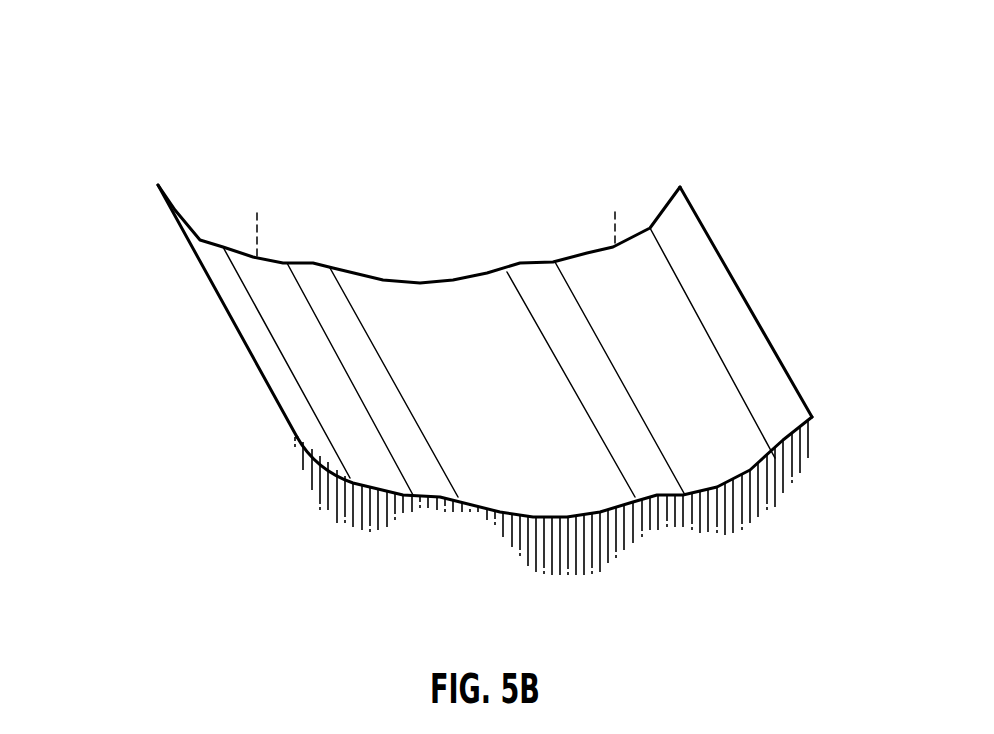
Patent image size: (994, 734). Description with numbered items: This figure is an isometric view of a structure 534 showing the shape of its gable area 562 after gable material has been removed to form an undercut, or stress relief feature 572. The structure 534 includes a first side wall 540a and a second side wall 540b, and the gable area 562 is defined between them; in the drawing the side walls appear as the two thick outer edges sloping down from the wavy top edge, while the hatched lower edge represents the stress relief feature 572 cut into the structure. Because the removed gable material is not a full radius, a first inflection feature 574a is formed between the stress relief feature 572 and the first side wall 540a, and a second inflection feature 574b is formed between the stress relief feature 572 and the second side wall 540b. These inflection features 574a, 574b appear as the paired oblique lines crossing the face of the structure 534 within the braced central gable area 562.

The structure 534 is at (151, 63).
The first side wall 540a is at (203, 244).
The second side wall 540b is at (668, 230).
The gable area 562 is at (615, 212).
The stress relief feature 572 is at (563, 518).
The first inflection feature 574a is at (315, 262).
The second inflection feature 574b is at (530, 260).